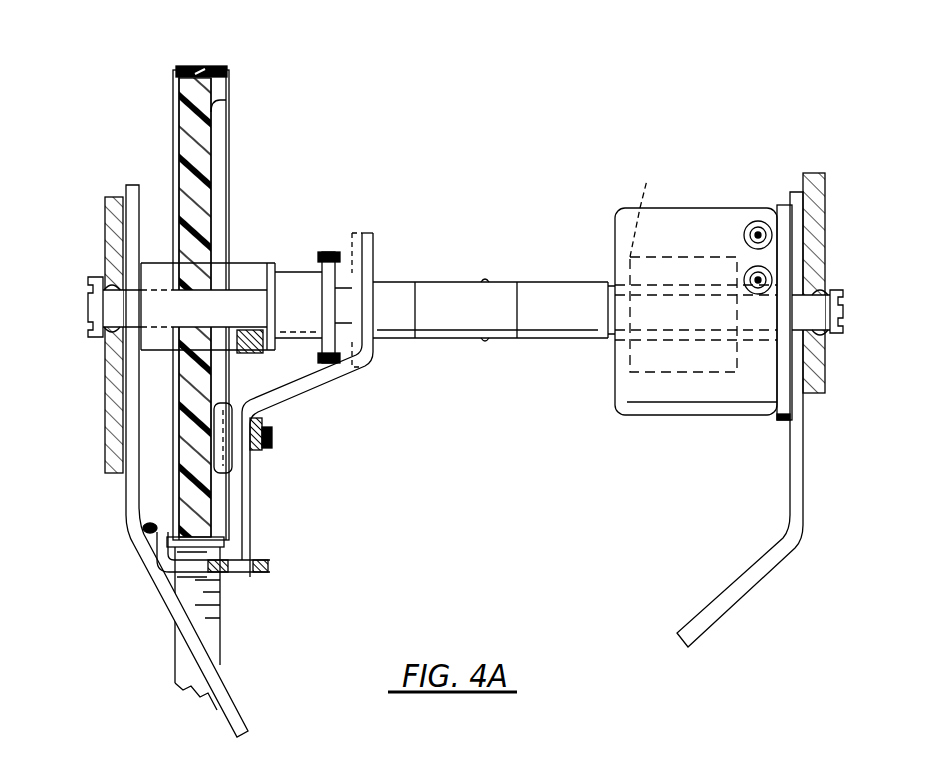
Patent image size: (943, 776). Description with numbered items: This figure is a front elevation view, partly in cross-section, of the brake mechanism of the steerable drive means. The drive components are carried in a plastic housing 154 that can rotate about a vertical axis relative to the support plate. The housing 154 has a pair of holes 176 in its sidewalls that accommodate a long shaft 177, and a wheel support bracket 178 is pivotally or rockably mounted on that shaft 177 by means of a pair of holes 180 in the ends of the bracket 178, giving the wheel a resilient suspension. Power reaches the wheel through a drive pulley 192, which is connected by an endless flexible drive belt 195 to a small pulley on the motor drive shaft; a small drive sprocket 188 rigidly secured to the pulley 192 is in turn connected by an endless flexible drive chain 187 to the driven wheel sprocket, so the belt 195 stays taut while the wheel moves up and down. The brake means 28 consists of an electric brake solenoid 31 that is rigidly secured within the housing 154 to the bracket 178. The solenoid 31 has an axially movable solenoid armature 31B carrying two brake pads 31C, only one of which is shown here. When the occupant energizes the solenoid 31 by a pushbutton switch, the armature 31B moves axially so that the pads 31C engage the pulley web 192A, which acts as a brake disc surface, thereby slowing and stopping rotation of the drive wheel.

The brake means 28 is at (684, 202).
The electric brake solenoid 31 is at (730, 207).
The solenoid armature 31B is at (647, 180).
The brake pad 31C is at (262, 388).
The housing 154 is at (105, 215).
The holes 176 is at (116, 283).
The long shaft 177 is at (843, 302).
The wheel support bracket 178 is at (170, 617).
The holes 180 is at (95, 322).
The drive chain 187 is at (316, 254).
The drive sprocket 188 is at (331, 253).
The drive pulley 192 is at (228, 96).
The pulley web 192A is at (213, 150).
The drive belt 195 is at (205, 67).